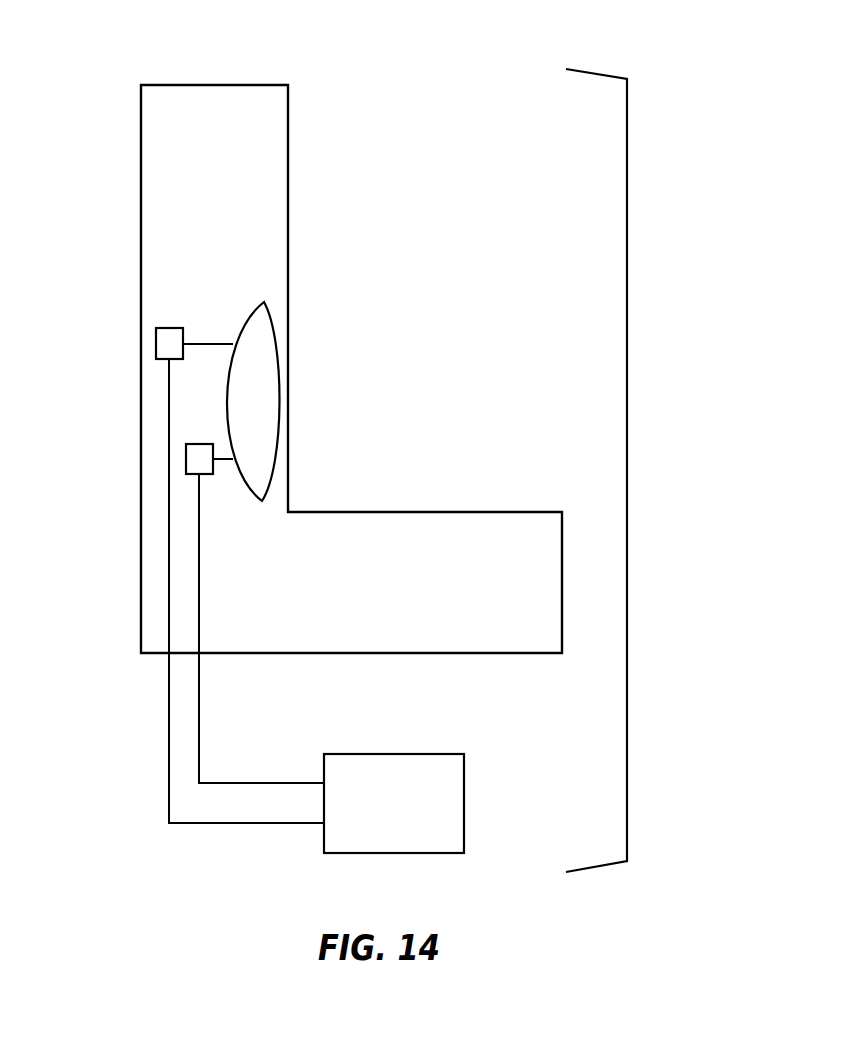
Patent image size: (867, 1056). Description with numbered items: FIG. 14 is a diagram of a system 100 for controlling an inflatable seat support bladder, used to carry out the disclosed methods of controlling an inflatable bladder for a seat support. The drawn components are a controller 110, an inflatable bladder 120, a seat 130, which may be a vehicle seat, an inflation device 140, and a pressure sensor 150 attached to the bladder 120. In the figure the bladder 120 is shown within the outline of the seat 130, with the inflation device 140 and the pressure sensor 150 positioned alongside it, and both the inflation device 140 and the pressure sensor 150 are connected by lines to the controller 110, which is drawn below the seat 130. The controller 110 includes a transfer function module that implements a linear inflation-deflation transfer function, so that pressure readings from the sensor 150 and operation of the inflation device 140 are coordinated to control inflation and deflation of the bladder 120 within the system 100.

The system 100 is at (627, 470).
The controller 110 is at (413, 815).
The inflatable bladder 120 is at (262, 381).
The seat 130 is at (188, 136).
The inflation device 140 is at (197, 458).
The pressure sensor 150 is at (168, 341).